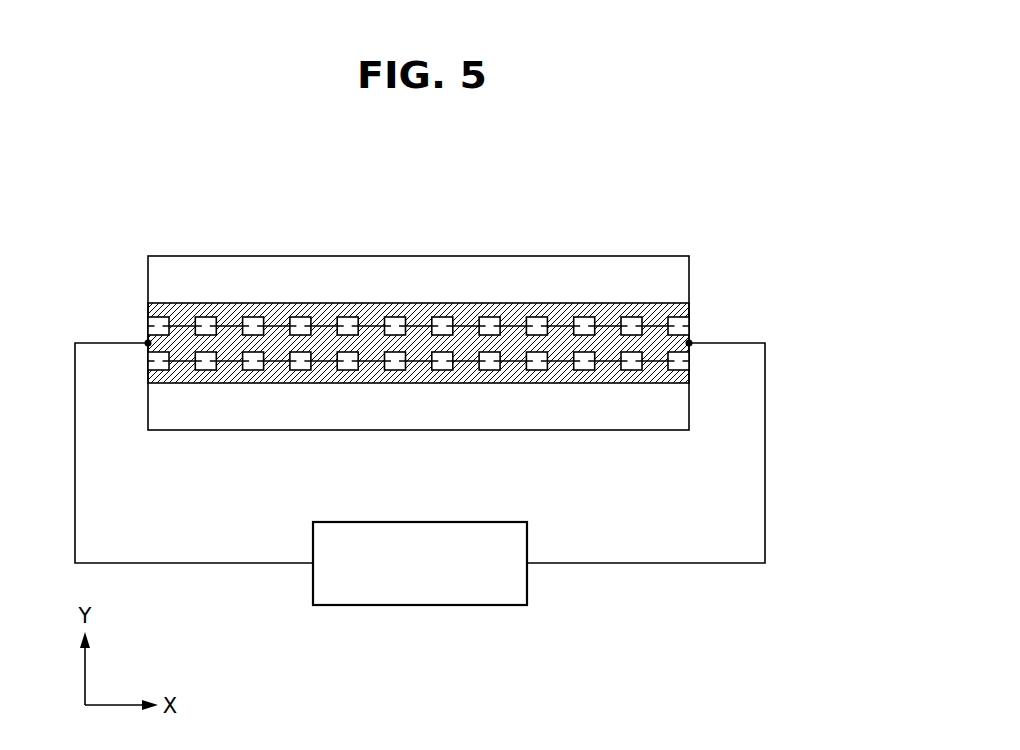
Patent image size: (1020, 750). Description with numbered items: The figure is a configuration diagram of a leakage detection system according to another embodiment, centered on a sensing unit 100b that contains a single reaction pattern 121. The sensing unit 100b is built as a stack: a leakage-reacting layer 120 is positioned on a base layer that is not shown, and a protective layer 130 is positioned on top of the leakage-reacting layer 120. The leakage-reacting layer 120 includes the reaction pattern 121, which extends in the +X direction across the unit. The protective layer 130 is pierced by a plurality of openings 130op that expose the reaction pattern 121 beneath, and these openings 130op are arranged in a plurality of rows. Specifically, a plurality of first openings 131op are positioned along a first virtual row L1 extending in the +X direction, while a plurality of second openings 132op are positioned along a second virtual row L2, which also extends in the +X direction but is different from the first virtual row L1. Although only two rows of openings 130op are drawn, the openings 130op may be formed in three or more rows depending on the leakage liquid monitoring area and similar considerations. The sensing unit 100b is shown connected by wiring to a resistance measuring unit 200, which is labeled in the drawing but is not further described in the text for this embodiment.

The sensing unit 100b is at (486, 310).
The protective layer 130 is at (680, 268).
The leakage-reacting layer 120 is at (486, 341).
The reaction pattern 121 is at (680, 312).
The openings 130op is at (418, 261).
The first openings 131op is at (490, 316).
The second openings 132op is at (548, 357).
The first virtual row L1 is at (378, 325).
The second virtual row L2 is at (375, 362).
The resistance measuring unit 200 is at (435, 521).